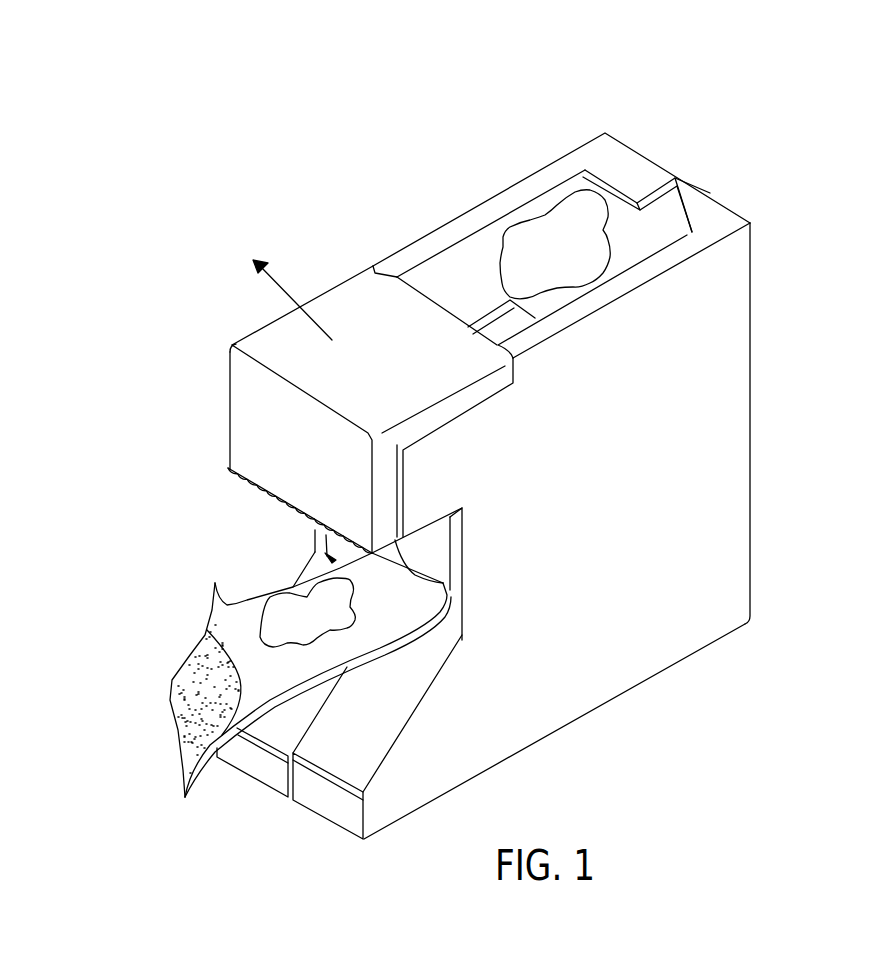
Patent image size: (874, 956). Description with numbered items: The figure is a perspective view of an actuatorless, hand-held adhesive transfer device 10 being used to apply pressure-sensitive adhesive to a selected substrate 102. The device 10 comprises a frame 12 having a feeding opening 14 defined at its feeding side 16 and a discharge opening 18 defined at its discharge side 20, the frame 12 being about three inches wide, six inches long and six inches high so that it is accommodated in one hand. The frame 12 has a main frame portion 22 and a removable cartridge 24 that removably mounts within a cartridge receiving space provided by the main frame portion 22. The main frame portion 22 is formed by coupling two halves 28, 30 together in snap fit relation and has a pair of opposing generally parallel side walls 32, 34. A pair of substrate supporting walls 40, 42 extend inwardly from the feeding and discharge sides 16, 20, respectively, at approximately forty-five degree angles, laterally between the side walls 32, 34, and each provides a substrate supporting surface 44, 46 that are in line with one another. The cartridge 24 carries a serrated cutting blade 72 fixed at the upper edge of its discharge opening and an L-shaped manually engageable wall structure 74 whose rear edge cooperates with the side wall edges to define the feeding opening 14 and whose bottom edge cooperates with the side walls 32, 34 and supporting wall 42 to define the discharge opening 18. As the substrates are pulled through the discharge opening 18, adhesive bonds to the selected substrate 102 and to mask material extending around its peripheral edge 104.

The adhesive transfer device 10 is at (258, 134).
The frame 12 is at (608, 470).
The feeding opening 14 is at (485, 243).
The feeding side 16 is at (561, 230).
The discharge opening 18 is at (332, 545).
The discharge side 20 is at (341, 454).
The main frame portion 22 is at (725, 560).
The removable cartridge 24 is at (337, 406).
The half 28 is at (742, 253).
The half 30 is at (428, 237).
The side wall 32 is at (643, 436).
The side wall 34 is at (468, 289).
The substrate supporting wall 40 is at (617, 207).
The substrate supporting wall 42 is at (388, 728).
The substrate supporting surface 44 is at (655, 233).
The substrate supporting surface 46 is at (420, 668).
The serrated cutting blade 72 is at (248, 497).
The L-shaped manually engageable wall structure 74 is at (262, 340).
The selected substrate 102 is at (322, 626).
The peripheral edge 104 is at (350, 605).